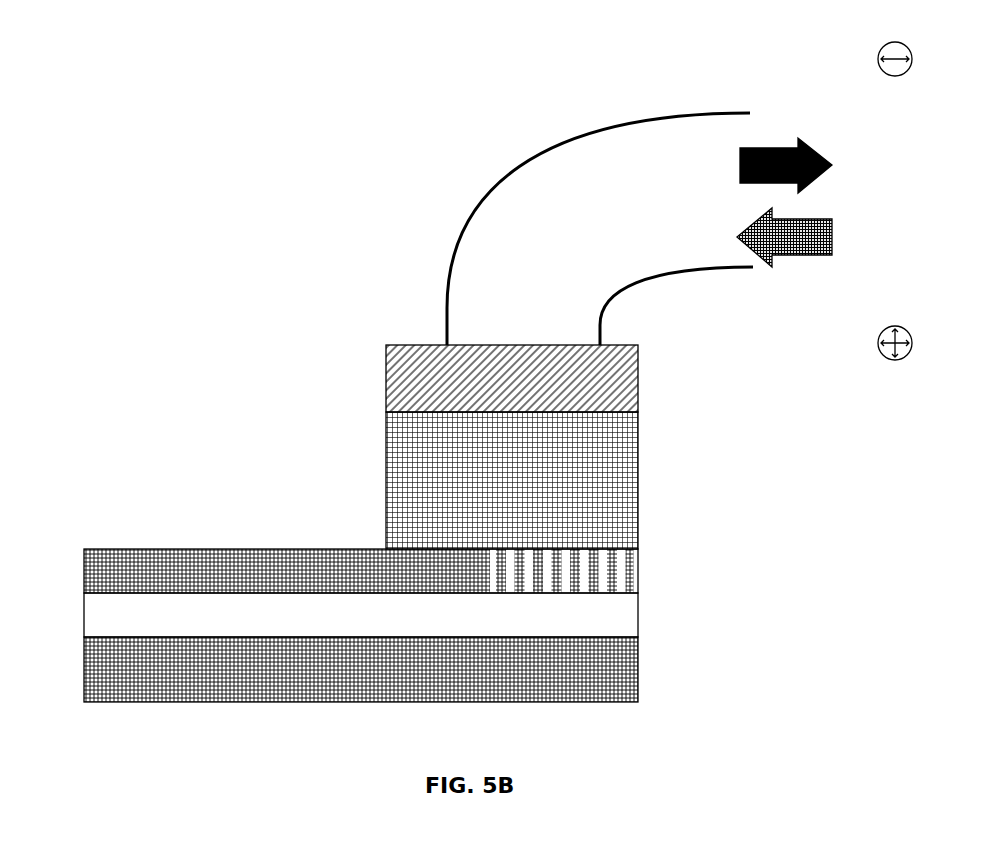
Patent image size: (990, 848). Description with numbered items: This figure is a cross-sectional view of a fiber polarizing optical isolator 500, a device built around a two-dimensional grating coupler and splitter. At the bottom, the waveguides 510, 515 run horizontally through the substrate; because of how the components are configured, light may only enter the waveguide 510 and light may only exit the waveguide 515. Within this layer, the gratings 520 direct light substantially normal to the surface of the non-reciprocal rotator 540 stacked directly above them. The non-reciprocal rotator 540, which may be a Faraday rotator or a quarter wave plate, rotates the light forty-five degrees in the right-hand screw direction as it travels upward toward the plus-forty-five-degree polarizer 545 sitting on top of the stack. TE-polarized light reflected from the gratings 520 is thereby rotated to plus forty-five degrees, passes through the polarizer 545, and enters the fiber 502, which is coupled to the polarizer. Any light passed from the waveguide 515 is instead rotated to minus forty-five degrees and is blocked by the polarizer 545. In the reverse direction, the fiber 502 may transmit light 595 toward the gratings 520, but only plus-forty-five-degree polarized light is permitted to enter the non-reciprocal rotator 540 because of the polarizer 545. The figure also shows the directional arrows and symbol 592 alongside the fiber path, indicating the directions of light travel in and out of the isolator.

The optical isolator 500 is at (158, 390).
The fiber 502 is at (498, 192).
The waveguide 510 is at (257, 562).
The waveguide 515 is at (361, 597).
The gratings 520 is at (577, 580).
The non-reciprocal rotator 540 is at (475, 493).
The +45° polarizer 545 is at (385, 372).
The lateral movement direction 592 is at (807, 138).
The light 595 is at (817, 255).